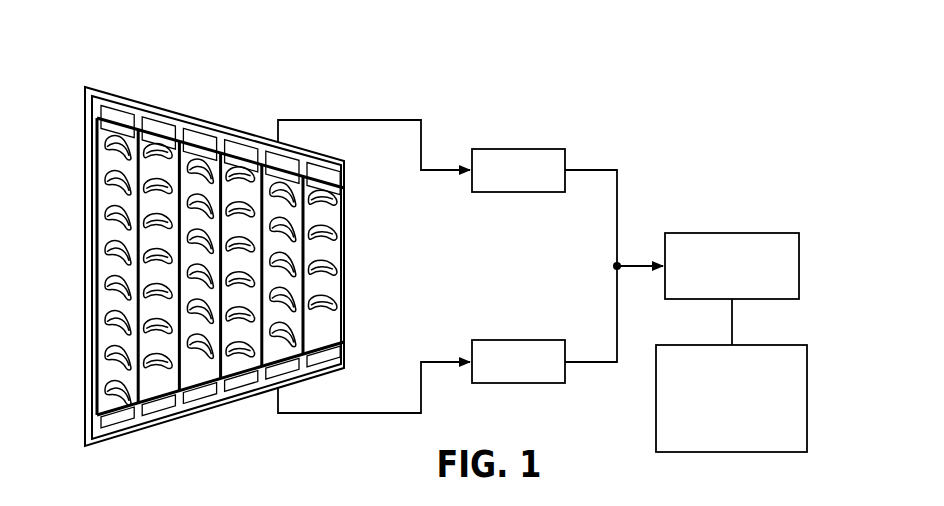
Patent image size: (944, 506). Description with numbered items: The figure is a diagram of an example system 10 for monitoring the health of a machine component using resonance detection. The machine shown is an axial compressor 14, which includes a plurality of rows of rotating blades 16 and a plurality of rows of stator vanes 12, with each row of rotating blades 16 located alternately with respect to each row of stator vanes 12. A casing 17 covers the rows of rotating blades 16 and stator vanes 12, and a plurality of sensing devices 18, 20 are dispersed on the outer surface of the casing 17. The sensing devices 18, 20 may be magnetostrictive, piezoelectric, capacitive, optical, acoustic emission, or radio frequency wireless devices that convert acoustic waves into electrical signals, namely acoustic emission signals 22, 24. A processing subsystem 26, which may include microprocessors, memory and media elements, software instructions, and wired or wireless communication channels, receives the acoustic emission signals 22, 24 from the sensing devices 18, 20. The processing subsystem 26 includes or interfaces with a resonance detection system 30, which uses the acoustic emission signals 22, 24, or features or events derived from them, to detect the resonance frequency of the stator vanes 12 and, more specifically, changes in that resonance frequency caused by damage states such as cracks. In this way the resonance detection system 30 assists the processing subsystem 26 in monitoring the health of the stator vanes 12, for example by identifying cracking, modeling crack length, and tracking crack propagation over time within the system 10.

The system 10 is at (676, 80).
The stator vanes 12 is at (158, 155).
The axial compressor 14 is at (340, 92).
The rotating blades 16 is at (114, 134).
The casing 17 is at (243, 135).
The sensing device 18 is at (518, 149).
The sensing device 20 is at (515, 340).
The acoustic emission signal 22 is at (590, 170).
The acoustic emission signal 24 is at (585, 363).
The processing subsystem 26 is at (731, 233).
The resonance detection system 30 is at (718, 443).